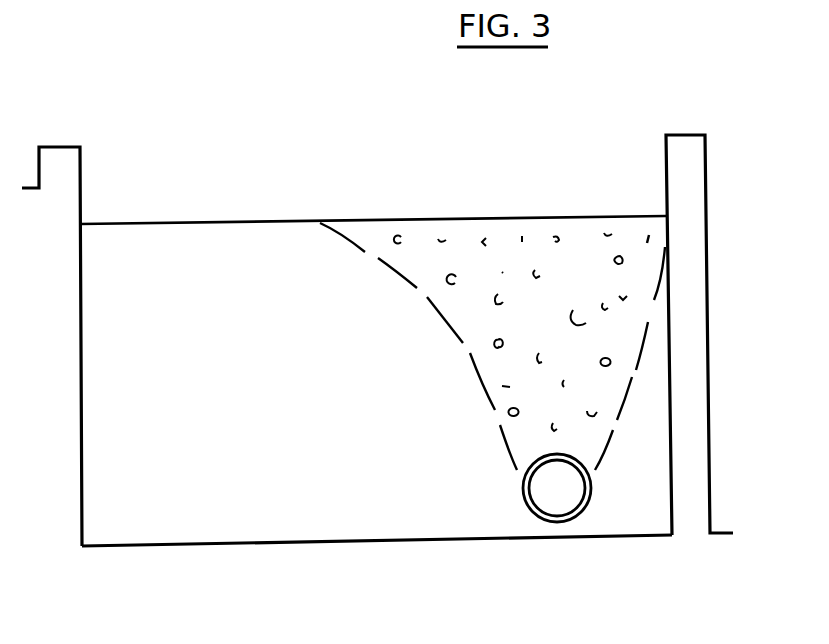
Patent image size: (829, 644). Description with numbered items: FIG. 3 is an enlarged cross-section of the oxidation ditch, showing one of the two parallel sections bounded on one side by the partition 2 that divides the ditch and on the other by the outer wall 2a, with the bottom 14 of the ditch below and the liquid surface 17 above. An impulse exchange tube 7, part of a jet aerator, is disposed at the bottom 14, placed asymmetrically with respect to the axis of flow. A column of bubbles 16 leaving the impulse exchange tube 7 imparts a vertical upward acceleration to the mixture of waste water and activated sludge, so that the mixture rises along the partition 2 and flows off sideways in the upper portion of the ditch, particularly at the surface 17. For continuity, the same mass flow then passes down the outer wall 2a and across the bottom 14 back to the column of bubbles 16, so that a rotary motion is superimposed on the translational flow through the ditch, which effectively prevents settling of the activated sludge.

The partition 2 is at (670, 150).
The outer wall 2a is at (65, 162).
The surface 17 is at (242, 222).
The column of bubbles 16 is at (465, 318).
The impulse exchange tube 7 is at (525, 495).
The bottom 14 is at (273, 543).